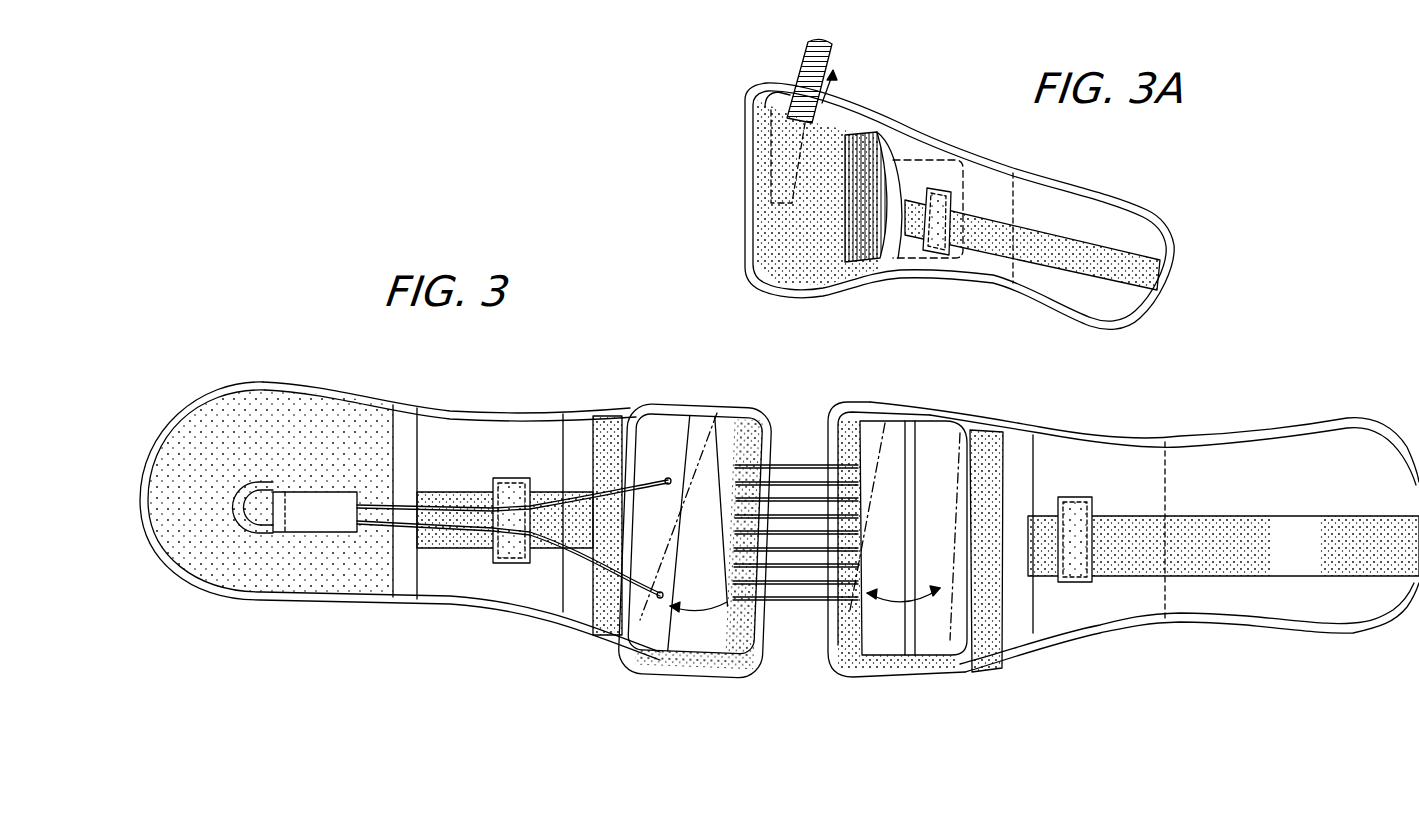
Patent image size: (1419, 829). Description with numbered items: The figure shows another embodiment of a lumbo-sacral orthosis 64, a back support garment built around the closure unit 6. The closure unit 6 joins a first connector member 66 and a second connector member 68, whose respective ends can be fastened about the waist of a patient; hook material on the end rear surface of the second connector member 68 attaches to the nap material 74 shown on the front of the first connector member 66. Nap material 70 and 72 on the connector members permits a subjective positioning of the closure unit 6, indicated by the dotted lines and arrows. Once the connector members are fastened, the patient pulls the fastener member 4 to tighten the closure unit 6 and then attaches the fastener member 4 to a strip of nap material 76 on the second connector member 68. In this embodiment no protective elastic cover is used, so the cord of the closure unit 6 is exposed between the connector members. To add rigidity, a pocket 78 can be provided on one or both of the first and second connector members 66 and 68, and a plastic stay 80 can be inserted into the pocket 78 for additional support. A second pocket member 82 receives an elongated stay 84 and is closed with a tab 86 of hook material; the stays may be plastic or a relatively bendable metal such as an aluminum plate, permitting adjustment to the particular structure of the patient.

In FIG. 3, the fastener member 4 is at (308, 505).
In FIG. 3, the closure unit 6 is at (789, 655).
In FIG. 3, the lumbo-sacral orthosis 64 is at (665, 693).
In FIG. 3, the first connector member 66 is at (377, 608).
In FIG. 3, the second connector member 68 is at (1167, 626).
In FIG. 3, the nap material 70 is at (726, 665).
In FIG. 3, the nap material 72 is at (856, 672).
In FIG. 3, the nap material 74 is at (272, 580).
In FIG. 3, the strip of nap material 76 is at (1277, 527).
In FIG. 3A, the pocket 78 is at (900, 252).
In FIG. 3A, the plastic stay 80 is at (858, 250).
In FIG. 3A, the second pocket member 82 is at (773, 107).
In FIG. 3A, the elongated stay 84 is at (830, 50).
In FIG. 3A, the tab 86 is at (790, 58).